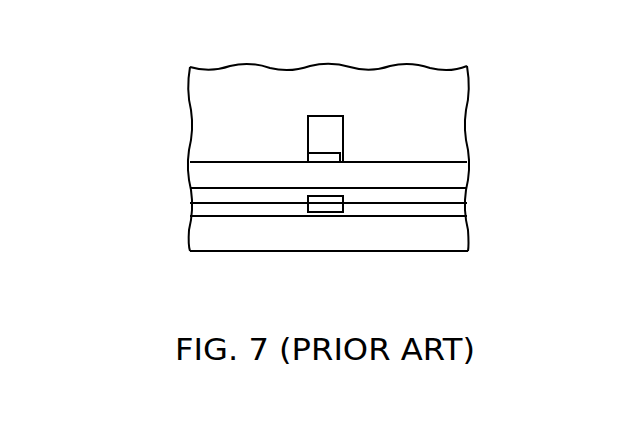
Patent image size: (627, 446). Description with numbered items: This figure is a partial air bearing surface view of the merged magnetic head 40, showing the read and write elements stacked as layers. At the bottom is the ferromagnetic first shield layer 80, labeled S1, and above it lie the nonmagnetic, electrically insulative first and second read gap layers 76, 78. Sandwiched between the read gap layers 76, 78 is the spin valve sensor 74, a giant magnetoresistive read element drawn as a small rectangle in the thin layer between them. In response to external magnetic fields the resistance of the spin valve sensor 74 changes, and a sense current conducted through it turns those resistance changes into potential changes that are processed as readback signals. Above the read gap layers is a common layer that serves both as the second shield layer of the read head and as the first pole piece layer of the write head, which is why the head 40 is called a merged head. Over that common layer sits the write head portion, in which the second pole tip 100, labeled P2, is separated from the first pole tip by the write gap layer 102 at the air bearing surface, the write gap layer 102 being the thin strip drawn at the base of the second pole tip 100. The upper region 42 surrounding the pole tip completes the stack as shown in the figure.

The merged magnetic head 40 is at (491, 81).
The upper dielectric layer 42 is at (205, 90).
The first read gap layer 76 is at (226, 216).
The second read gap layer 78 is at (435, 197).
The first shield layer 80 is at (458, 235).
The substrate layer S1 is at (370, 234).
The spin valve sensor 74 is at (327, 203).
The plug P2 is at (333, 128).
The second pole tip 100 is at (328, 118).
The write gap layer 102 is at (325, 160).